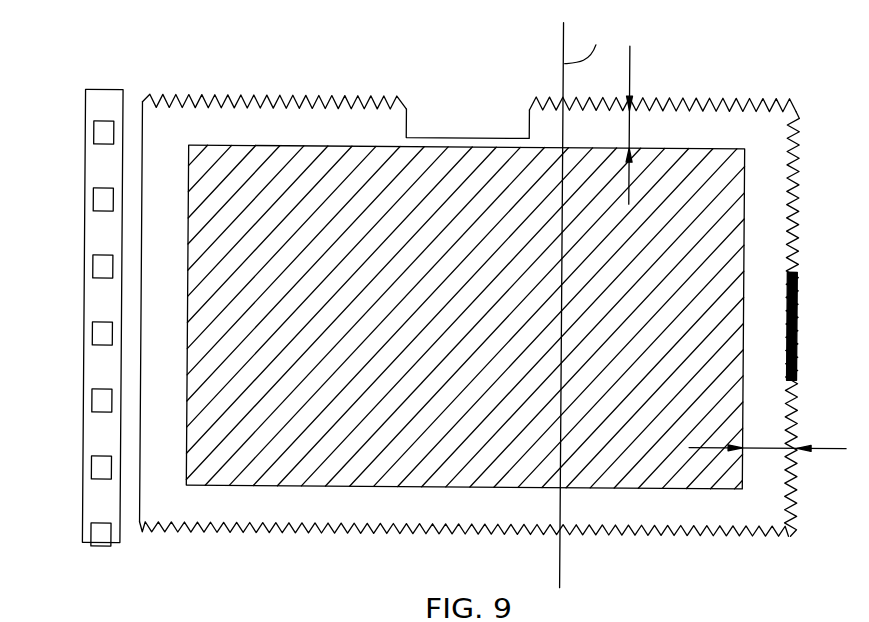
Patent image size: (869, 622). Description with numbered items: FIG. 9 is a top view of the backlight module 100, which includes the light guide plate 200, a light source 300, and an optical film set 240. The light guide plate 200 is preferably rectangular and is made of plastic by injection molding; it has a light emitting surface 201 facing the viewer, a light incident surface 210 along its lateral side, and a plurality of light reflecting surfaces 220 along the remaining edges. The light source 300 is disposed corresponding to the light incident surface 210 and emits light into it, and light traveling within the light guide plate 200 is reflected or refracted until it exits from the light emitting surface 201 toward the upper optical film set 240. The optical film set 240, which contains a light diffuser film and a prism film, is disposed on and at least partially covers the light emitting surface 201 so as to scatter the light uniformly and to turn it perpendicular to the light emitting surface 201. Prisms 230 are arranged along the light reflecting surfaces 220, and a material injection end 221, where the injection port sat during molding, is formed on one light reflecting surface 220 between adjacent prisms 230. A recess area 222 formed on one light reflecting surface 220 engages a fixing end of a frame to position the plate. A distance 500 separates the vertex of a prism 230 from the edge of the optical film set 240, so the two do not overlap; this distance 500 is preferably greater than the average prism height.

The backlight module 100 is at (100, 47).
The light guide plate 200 is at (688, 83).
The light emitting surface 201 is at (773, 198).
The light incident surface 210 is at (141, 458).
The light reflecting surfaces 220 is at (727, 100).
The material injection end 221 is at (797, 318).
The recess area 222 is at (463, 115).
The prisms 230 is at (370, 530).
The optical film set 240 is at (663, 470).
The light source 300 is at (90, 373).
The distance 500 is at (630, 100).